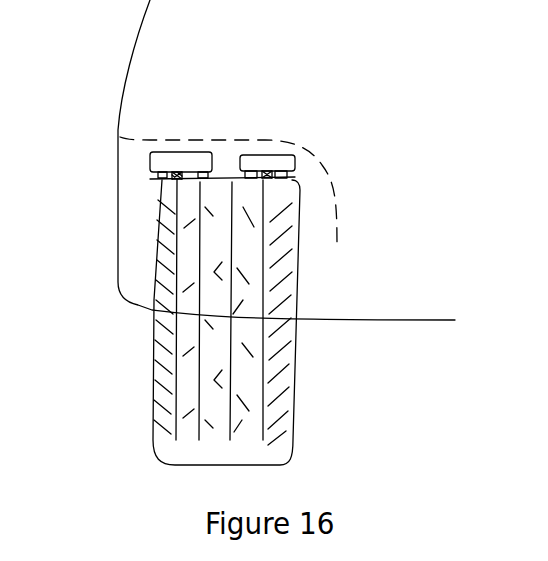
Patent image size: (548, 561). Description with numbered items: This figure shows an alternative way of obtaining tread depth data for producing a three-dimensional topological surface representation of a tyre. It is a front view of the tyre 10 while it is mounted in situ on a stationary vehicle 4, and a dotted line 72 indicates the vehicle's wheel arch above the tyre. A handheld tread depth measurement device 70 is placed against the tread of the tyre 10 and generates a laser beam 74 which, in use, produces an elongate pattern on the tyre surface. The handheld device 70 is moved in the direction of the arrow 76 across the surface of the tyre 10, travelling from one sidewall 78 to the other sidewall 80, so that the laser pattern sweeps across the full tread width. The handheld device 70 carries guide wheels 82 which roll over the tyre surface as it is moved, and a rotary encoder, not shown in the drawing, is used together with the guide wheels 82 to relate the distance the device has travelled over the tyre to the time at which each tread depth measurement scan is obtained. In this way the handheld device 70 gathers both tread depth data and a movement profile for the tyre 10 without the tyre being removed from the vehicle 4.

The vehicle 4 is at (262, 31).
The tyre 10 is at (178, 382).
The handheld tread depth measurement device 70 is at (258, 162).
The dotted line 72 is at (185, 140).
The laser beam 74 is at (177, 174).
The arrow 76 is at (230, 167).
The sidewall 78 is at (158, 227).
The sidewall 80 is at (300, 270).
The guide wheels 82 is at (150, 179).